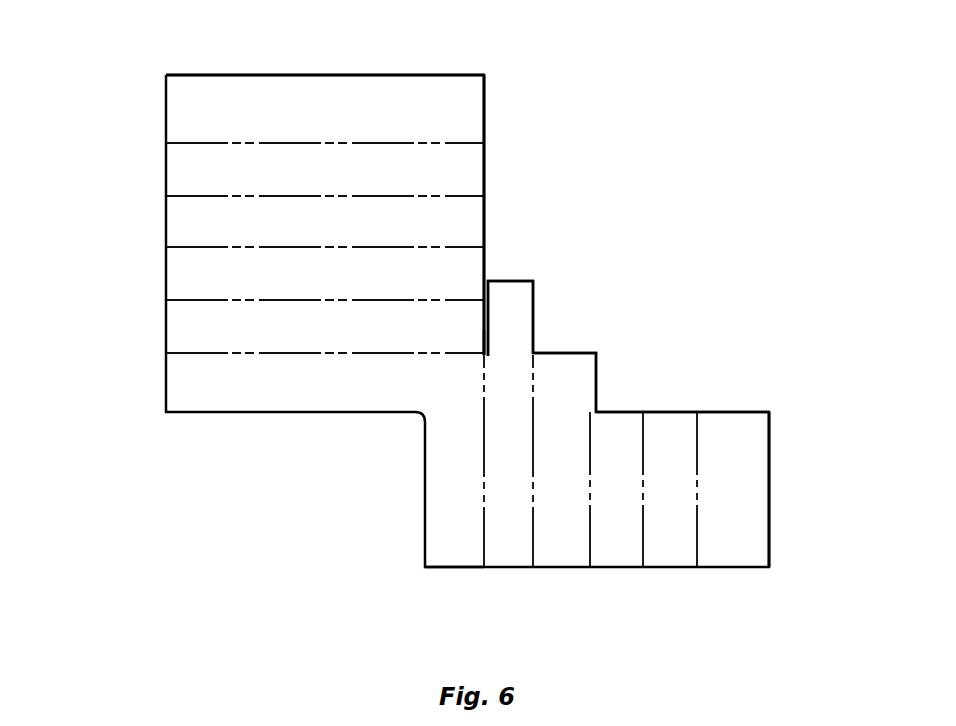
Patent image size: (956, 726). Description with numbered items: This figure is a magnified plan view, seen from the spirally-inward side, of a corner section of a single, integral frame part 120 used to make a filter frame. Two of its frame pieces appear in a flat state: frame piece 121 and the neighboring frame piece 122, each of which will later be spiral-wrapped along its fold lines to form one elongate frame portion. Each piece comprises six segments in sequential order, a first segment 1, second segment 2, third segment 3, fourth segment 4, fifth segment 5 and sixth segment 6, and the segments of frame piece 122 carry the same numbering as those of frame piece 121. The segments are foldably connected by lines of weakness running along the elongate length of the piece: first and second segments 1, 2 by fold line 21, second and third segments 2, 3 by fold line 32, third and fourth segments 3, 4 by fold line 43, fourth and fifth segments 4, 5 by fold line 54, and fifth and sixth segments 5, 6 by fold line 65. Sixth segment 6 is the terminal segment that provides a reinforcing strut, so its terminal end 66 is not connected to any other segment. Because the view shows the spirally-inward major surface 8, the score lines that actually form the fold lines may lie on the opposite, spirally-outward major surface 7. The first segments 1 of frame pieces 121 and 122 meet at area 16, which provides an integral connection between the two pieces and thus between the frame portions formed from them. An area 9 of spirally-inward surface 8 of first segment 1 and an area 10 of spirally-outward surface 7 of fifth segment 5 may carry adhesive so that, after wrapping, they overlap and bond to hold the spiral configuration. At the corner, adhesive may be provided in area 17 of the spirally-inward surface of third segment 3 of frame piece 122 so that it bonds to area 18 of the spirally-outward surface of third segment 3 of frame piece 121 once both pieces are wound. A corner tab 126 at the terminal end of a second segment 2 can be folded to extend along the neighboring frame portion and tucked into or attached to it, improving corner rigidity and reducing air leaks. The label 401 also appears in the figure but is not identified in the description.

The first segment 1 is at (183, 395).
The second segment 2 is at (170, 330).
The third segment 3 is at (170, 277).
The fourth segment 4 is at (172, 221).
The fifth segment 5 is at (172, 169).
The sixth segment 6 is at (172, 110).
The spirally-outward major surface 7 is at (750, 502).
The spirally-inward major surface 8 is at (758, 438).
The adhesive area of first segment 9 is at (218, 338).
The adhesive area of fifth segment 10 is at (448, 172).
The connection area 16 is at (475, 363).
The adhesive area of third segment of second frame piece 17 is at (565, 363).
The bonding area of third segment of first frame piece 18 is at (430, 277).
The fold line 21 is at (278, 353).
The fold line 32 is at (278, 300).
The fold line 43 is at (278, 247).
The fold line 54 is at (278, 195).
The fold line 65 is at (372, 142).
The terminal end 66 is at (292, 75).
The frame part 120 is at (686, 100).
The frame piece 121 is at (140, 44).
The frame piece 122 is at (803, 578).
The corner tab 126 is at (512, 292).
The layered structure 401 is at (273, 510).